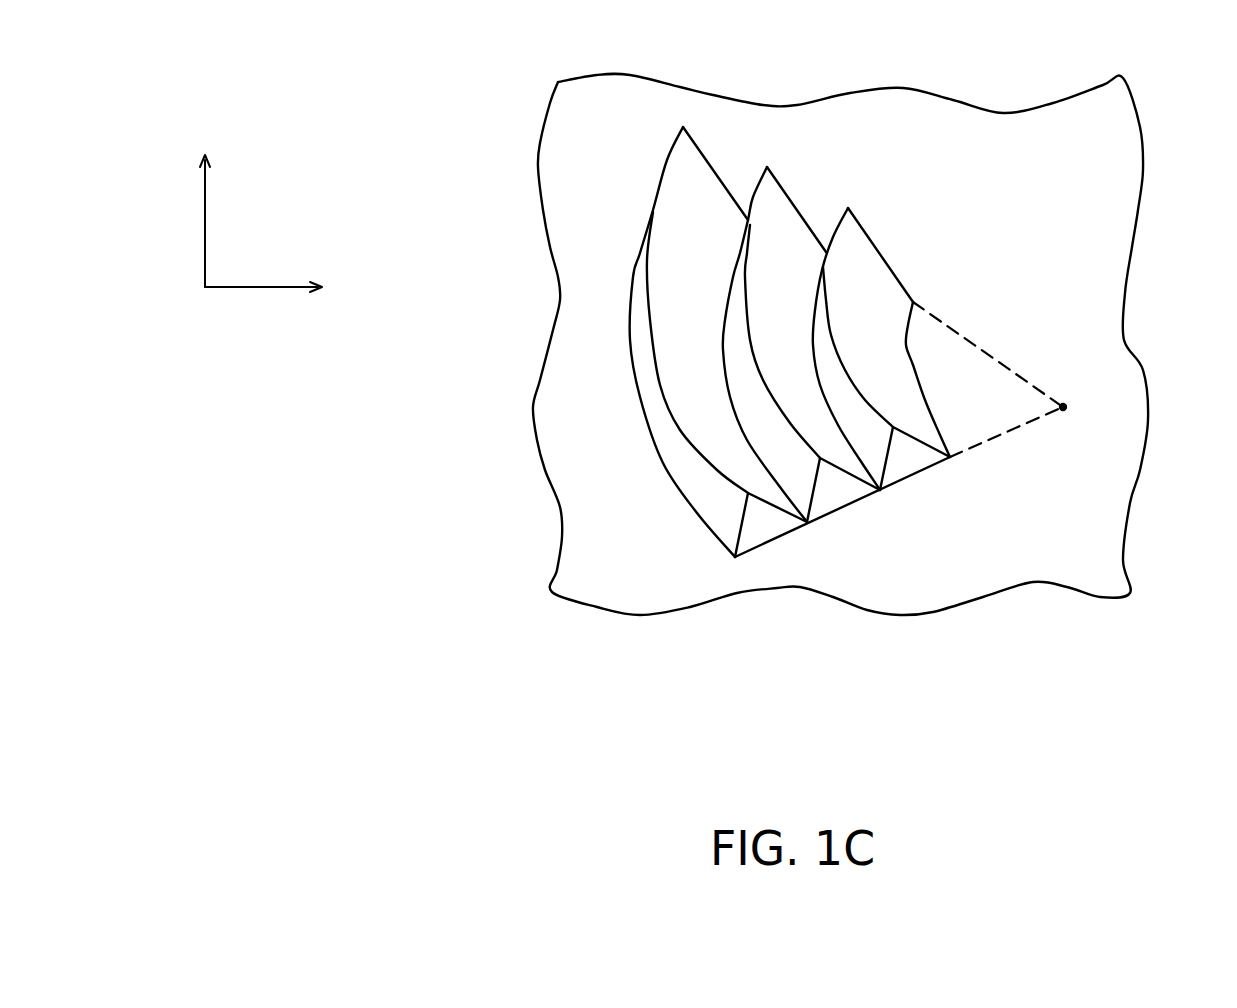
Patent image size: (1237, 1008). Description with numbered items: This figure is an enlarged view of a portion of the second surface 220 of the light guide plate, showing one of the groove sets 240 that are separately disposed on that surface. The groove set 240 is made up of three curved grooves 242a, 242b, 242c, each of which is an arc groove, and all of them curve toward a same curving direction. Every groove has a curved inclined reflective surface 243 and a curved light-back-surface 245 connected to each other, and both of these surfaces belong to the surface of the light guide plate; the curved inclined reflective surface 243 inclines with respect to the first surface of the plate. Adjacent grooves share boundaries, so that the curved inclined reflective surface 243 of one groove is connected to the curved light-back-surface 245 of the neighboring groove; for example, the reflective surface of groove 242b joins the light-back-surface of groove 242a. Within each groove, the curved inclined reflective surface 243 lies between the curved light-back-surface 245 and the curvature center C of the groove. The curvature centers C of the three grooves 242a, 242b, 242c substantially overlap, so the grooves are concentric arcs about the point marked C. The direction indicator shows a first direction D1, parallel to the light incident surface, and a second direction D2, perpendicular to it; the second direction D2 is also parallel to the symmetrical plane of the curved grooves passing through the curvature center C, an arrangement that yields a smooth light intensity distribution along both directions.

The second surface 220 is at (880, 344).
The groove set 240 is at (1085, 703).
The curved groove 242a is at (951, 455).
The curved groove 242b is at (839, 435).
The curved groove 242c is at (724, 415).
The curved inclined reflective surface 243 is at (836, 159).
The curved light-back-surface 245 is at (734, 288).
The curvature center C is at (1063, 407).
The first direction D1 is at (208, 197).
The second direction D2 is at (285, 288).